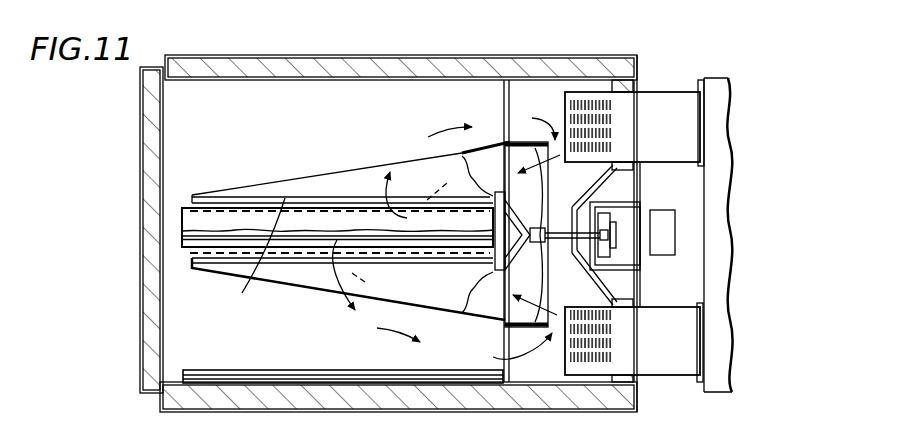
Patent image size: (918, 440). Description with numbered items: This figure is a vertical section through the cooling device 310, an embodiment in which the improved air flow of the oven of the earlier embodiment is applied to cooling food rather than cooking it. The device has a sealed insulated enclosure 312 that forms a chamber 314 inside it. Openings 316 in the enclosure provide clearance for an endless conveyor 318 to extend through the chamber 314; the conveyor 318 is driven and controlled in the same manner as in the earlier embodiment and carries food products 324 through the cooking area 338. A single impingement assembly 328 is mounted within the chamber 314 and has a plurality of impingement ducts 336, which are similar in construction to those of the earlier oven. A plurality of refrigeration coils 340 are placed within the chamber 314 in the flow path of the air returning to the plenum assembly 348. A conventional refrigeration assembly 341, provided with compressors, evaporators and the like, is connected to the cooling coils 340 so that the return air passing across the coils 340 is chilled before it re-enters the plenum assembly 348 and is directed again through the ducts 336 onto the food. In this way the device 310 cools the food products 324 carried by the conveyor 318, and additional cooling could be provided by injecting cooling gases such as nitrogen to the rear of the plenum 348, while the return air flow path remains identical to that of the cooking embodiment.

The cooling device 310 is at (683, 45).
The sealed insulated enclosure 312 is at (573, 53).
The chamber 314 is at (247, 125).
The openings 316 is at (182, 245).
The endless conveyor 318 is at (185, 232).
The food products 324 is at (340, 230).
The impingement assembly 328 is at (513, 138).
The impingement ducts 336 is at (270, 282).
The cooking area 338 is at (178, 212).
The refrigeration coils 340 is at (672, 95).
The refrigeration assembly 341 is at (714, 385).
The plenum assembly 348 is at (527, 327).